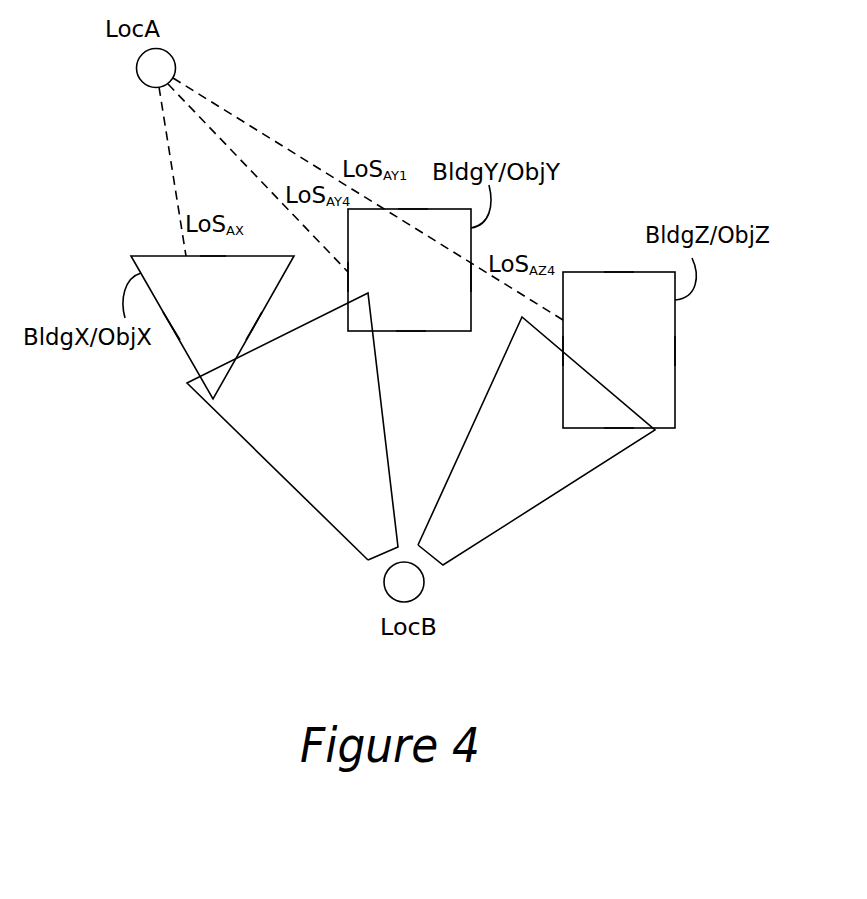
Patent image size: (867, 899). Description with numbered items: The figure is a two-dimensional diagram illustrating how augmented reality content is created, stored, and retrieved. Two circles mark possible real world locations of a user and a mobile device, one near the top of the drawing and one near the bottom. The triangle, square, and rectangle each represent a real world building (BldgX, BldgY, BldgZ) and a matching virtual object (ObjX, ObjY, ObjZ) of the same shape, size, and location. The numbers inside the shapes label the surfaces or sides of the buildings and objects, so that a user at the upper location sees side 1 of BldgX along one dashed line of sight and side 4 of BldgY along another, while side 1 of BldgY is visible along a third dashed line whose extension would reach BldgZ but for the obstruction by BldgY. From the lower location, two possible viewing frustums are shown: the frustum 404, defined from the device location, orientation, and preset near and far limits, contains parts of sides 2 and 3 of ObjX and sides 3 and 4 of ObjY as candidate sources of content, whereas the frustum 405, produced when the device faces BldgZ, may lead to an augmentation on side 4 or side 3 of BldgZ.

The side 1 is at (417, 256).
The side 2 is at (456, 313).
The side 3 is at (398, 365).
The side 4 is at (467, 313).
The frustum 404 is at (258, 452).
The frustum 405 is at (547, 500).